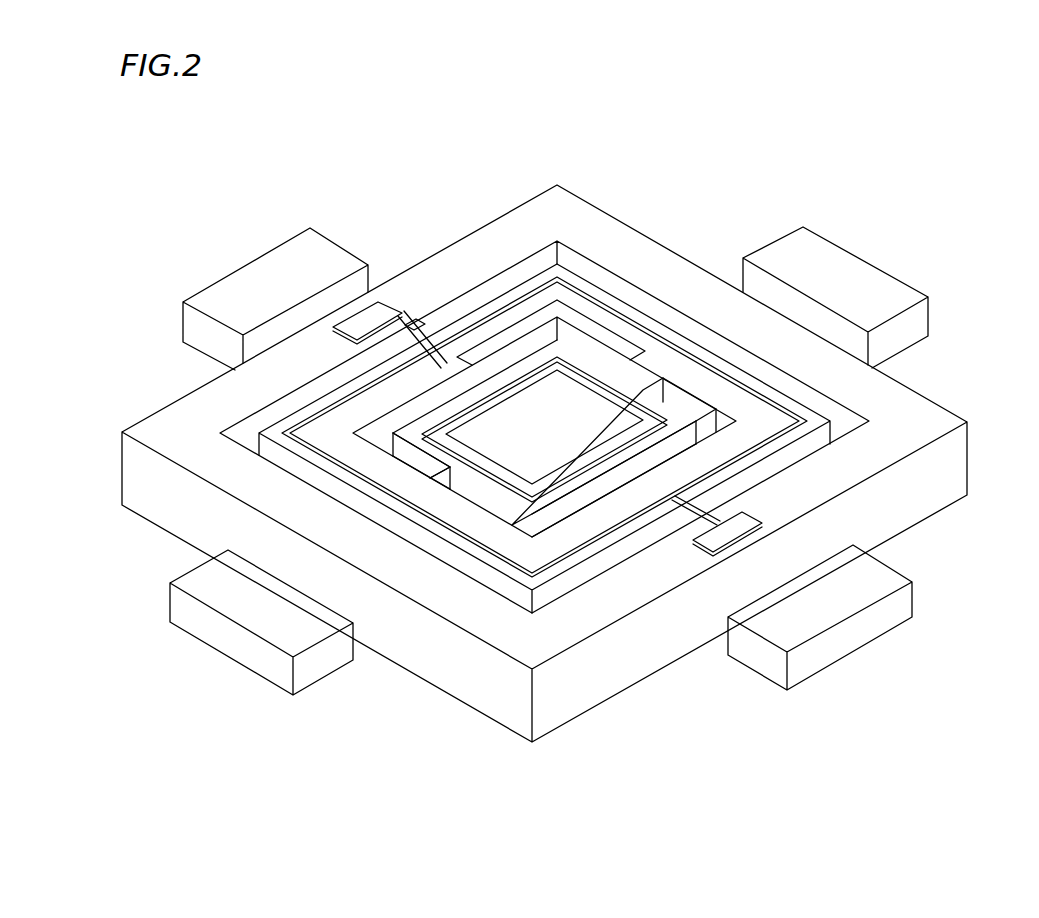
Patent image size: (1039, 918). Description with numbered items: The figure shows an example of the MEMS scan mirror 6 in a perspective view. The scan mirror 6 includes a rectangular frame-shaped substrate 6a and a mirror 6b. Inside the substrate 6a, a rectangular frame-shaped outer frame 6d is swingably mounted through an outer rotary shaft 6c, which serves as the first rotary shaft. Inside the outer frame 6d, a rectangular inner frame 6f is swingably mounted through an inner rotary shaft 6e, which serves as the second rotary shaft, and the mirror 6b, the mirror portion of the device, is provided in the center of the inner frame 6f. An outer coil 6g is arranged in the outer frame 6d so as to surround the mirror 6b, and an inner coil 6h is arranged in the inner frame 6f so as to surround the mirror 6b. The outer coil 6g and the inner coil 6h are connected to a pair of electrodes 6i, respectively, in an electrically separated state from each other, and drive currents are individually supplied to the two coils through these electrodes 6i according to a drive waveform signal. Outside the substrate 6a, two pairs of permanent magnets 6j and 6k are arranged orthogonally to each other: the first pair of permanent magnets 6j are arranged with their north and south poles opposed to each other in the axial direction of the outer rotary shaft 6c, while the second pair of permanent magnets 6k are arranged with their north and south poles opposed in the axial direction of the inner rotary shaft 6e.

The MEMS scan mirror 6 is at (802, 133).
The substrate 6a is at (563, 203).
The mirror 6b is at (568, 434).
The outer rotary shaft 6c is at (415, 330).
The outer frame 6d is at (577, 280).
The inner rotary shaft 6e is at (452, 478).
The inner frame 6f is at (585, 355).
The outer coil 6g is at (568, 550).
The inner coil 6h is at (592, 468).
The electrodes 6i is at (383, 313).
The first pair of permanent magnets 6j is at (270, 287).
The second pair of permanent magnets 6k is at (842, 283).